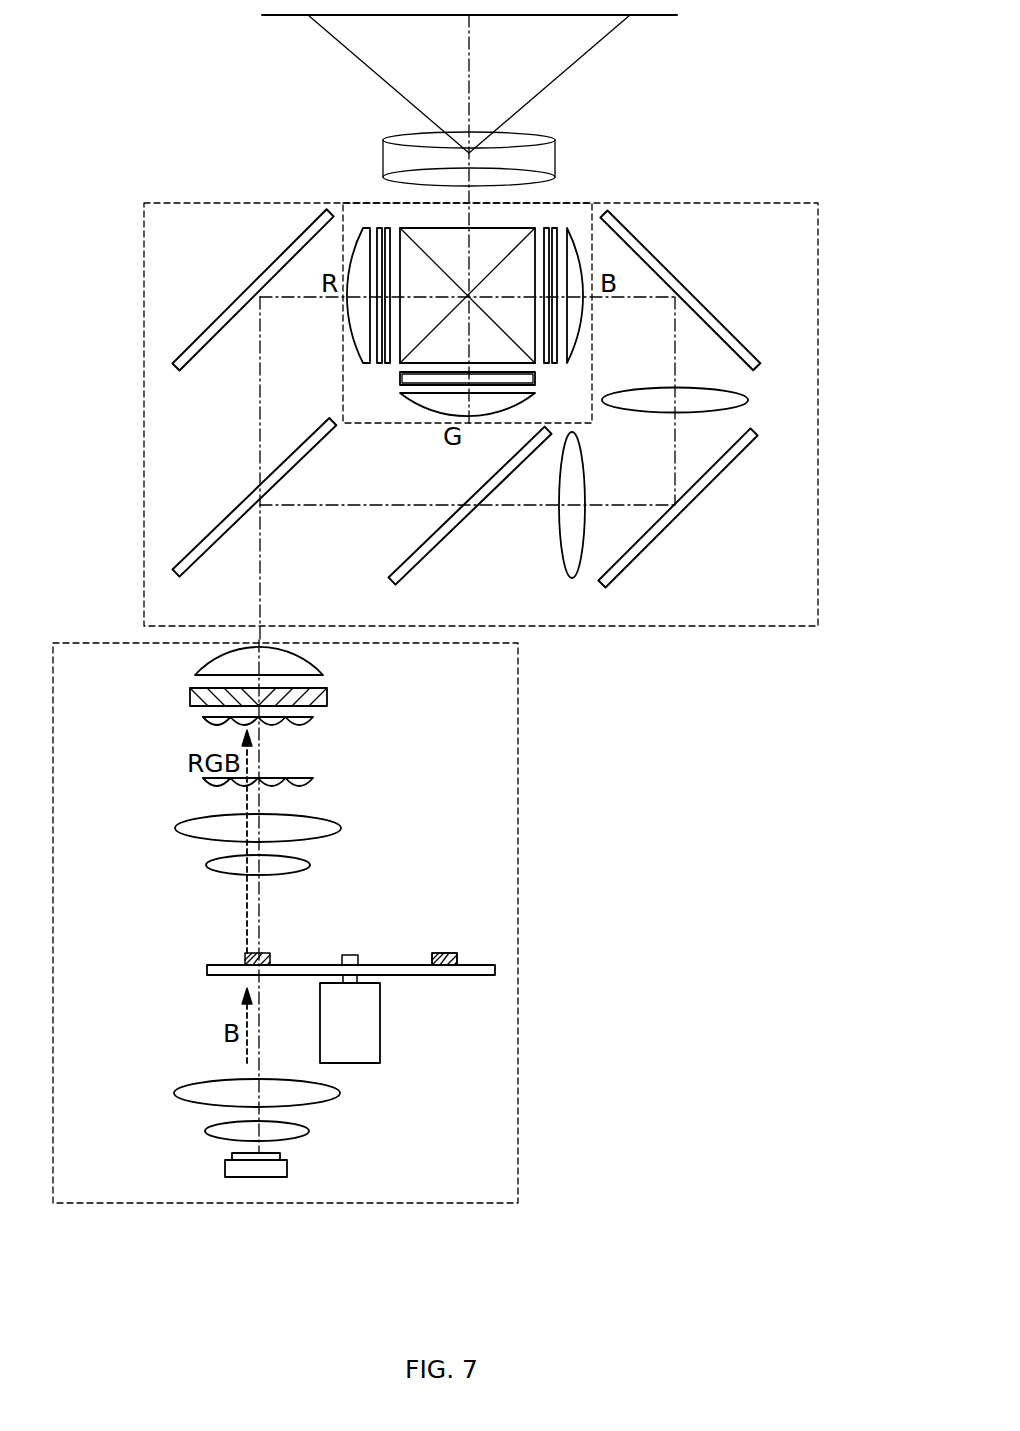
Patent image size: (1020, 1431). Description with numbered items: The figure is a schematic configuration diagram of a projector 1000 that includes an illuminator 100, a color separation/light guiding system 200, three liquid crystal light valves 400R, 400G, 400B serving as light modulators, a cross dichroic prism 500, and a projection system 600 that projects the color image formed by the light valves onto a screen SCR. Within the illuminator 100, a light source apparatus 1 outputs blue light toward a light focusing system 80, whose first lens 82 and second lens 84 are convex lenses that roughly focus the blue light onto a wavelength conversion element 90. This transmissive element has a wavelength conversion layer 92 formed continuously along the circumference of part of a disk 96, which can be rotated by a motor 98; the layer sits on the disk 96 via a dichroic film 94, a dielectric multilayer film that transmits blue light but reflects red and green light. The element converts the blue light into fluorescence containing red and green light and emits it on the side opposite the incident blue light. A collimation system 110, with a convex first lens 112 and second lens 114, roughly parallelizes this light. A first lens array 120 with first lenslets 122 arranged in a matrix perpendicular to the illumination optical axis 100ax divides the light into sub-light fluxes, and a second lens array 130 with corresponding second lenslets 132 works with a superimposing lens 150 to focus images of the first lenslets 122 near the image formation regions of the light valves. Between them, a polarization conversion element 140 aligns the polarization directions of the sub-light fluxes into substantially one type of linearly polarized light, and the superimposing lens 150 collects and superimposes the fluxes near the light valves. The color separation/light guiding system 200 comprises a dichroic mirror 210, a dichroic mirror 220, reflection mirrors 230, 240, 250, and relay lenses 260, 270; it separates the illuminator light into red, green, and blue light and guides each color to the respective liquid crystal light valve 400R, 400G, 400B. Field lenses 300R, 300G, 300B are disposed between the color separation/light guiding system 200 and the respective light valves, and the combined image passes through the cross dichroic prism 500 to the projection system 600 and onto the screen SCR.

The projector 1000 is at (876, 33).
The screen SCR is at (660, 17).
The projection system 600 is at (383, 160).
The cross dichroic prism 500 is at (538, 226).
The liquid crystal light valve 400R is at (385, 226).
The liquid crystal light valve 400G is at (400, 378).
The liquid crystal light valve 400B is at (553, 226).
The field lens 300R is at (363, 226).
The field lens 300G is at (400, 400).
The field lens 300B is at (580, 226).
The color separation/light guiding system 200 is at (144, 440).
The dichroic mirror 210 is at (184, 560).
The dichroic mirror 220 is at (428, 558).
The reflection mirror 230 is at (190, 352).
The reflection mirror 240 is at (638, 558).
The reflection mirror 250 is at (750, 355).
The relay lens 260 is at (572, 578).
The relay lens 270 is at (748, 401).
The illuminator 100 is at (370, 1204).
The illumination optical axis 100ax is at (258, 634).
The superimposing lens 150 is at (323, 672).
The polarization conversion element 140 is at (327, 697).
The second lens array 130 is at (313, 720).
The second lenslet 132 is at (210, 722).
The first lens array 120 is at (313, 781).
The first lenslet 122 is at (210, 784).
The collimation system 110 is at (198, 851).
The second lens 114 is at (178, 830).
The first lens 112 is at (205, 866).
The wavelength conversion element 90 is at (392, 979).
The wavelength conversion layer 92 is at (457, 955).
The dichroic film 94 is at (457, 962).
The disk 96 is at (495, 970).
The motor 98 is at (380, 1012).
The light focusing system 80 is at (315, 1105).
The second lens 84 is at (340, 1096).
The first lens 82 is at (307, 1126).
The light source apparatus 1 is at (220, 1160).